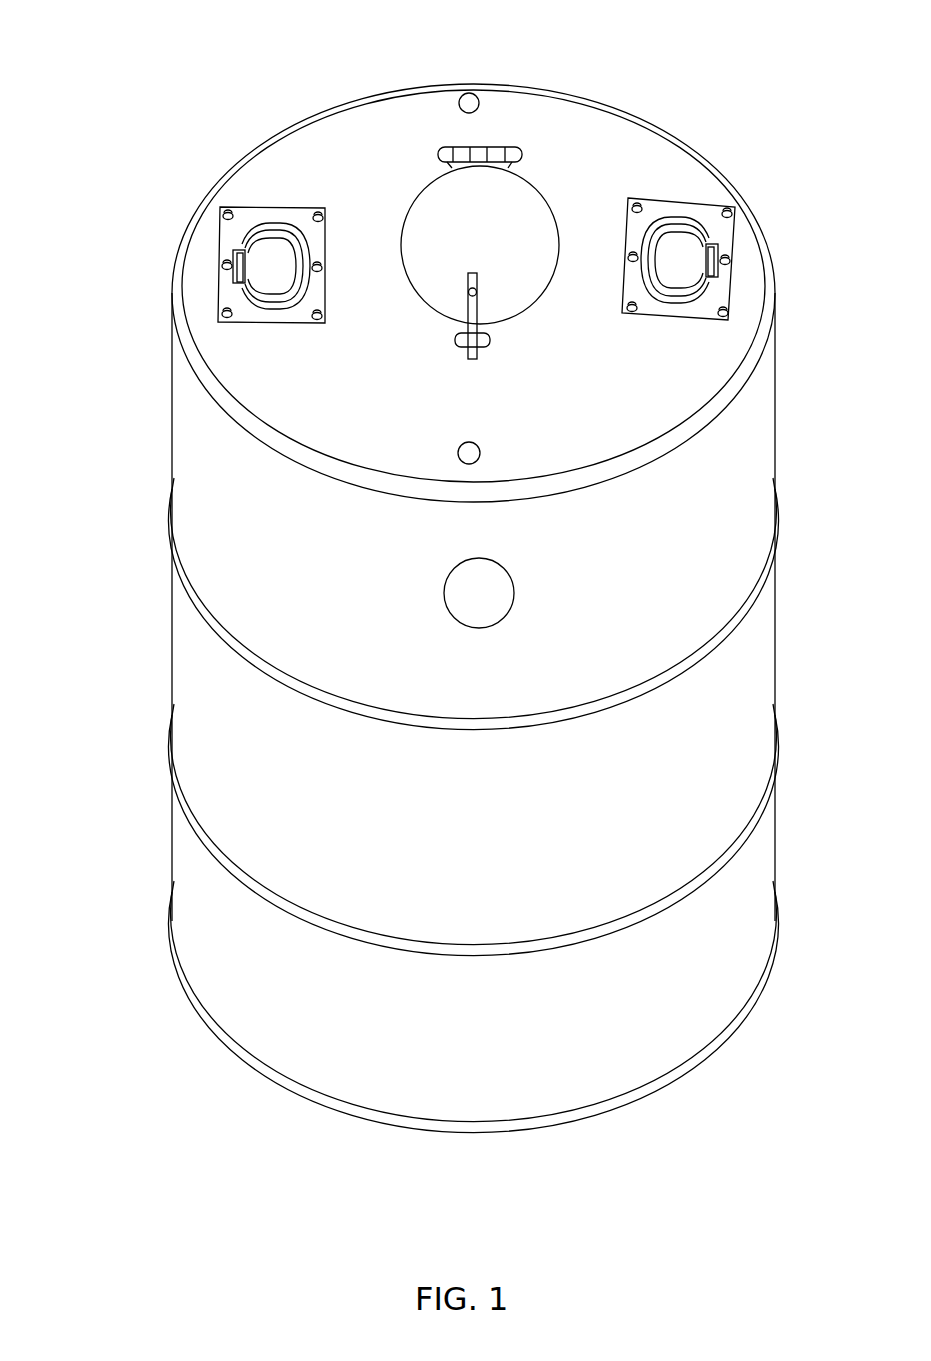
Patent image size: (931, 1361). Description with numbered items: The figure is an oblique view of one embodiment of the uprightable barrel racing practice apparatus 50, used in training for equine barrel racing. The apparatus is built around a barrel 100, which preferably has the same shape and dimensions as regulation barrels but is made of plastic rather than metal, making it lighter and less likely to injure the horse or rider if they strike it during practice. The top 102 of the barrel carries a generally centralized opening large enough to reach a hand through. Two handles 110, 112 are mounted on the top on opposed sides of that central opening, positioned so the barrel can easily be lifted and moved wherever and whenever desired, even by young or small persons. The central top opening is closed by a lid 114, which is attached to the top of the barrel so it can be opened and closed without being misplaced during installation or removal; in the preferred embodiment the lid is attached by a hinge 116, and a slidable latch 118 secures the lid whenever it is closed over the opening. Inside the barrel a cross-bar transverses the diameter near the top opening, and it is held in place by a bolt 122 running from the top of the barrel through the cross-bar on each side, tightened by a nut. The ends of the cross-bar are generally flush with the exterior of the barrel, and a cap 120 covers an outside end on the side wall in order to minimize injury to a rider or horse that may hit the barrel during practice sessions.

The practice apparatus 50 is at (112, 422).
The barrel 100 is at (173, 673).
The top of the barrel 102 is at (318, 140).
The handle 110 is at (268, 223).
The handle 112 is at (708, 213).
The lid 114 is at (428, 210).
The hinge 116 is at (508, 147).
The slidable latch 118 is at (477, 310).
The cap 120 is at (515, 582).
The bolt 122 is at (469, 93).